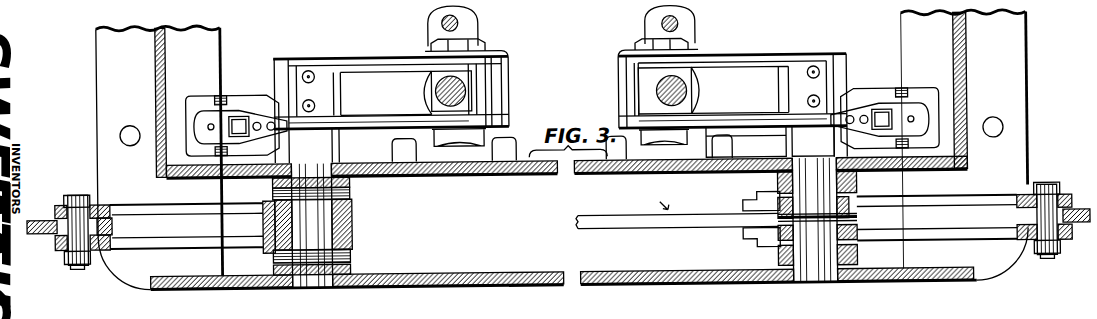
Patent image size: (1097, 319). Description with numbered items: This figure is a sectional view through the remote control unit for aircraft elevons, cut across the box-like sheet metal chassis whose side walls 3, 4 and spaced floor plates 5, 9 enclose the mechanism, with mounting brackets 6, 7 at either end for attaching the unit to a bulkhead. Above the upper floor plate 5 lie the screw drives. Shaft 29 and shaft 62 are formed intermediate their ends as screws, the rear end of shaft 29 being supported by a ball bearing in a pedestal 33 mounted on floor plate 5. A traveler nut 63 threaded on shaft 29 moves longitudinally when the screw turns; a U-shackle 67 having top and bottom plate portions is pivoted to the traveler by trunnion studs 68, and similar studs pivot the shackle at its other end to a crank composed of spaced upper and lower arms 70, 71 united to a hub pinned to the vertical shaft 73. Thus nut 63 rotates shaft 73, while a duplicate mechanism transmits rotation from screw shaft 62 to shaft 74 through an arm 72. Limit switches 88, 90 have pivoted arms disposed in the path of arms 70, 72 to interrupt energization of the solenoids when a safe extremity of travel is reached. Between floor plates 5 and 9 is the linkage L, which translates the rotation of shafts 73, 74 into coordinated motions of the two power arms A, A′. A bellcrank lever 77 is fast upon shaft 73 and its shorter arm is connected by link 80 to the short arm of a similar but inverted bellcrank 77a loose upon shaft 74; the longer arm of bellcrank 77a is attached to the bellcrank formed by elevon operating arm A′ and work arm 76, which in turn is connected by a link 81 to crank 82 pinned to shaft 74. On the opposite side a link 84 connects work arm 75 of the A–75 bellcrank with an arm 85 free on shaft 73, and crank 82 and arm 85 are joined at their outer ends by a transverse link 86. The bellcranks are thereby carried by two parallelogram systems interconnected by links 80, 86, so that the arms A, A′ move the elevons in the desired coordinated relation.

The side wall 3 is at (157, 48).
The side wall 4 is at (970, 57).
The floor plate 5 is at (572, 175).
The mounting bracket 6 is at (108, 88).
The mounting bracket 7 is at (1015, 95).
The floor plate 9 is at (586, 271).
The shaft 29 is at (676, 84).
The pedestal 33 is at (657, 12).
The shaft 62 is at (447, 81).
The traveler nut 63 is at (707, 67).
The U-shackle 67 is at (625, 52).
The trunnion studs 68 is at (686, 43).
The upper arm 70 is at (757, 60).
The lower arm 71 is at (763, 120).
The arm 72 is at (360, 121).
The shaft 73 is at (778, 184).
The shaft 74 is at (352, 201).
The work arm 75 is at (1018, 208).
The work arm 76 is at (102, 213).
The bellcrank lever 77 is at (753, 232).
The bellcrank lever 77a is at (150, 238).
The link 80 is at (603, 222).
The link 81 is at (28, 0).
The crank 82 is at (273, 258).
The link 84 is at (888, 0).
The arm 85 is at (865, 242).
The link 86 is at (538, 12).
The limit switch 88 is at (875, 97).
The limit switch 90 is at (250, 93).
The power arm A is at (1077, 199).
The power arm A' is at (42, 213).
The linkage system L is at (250, 0).